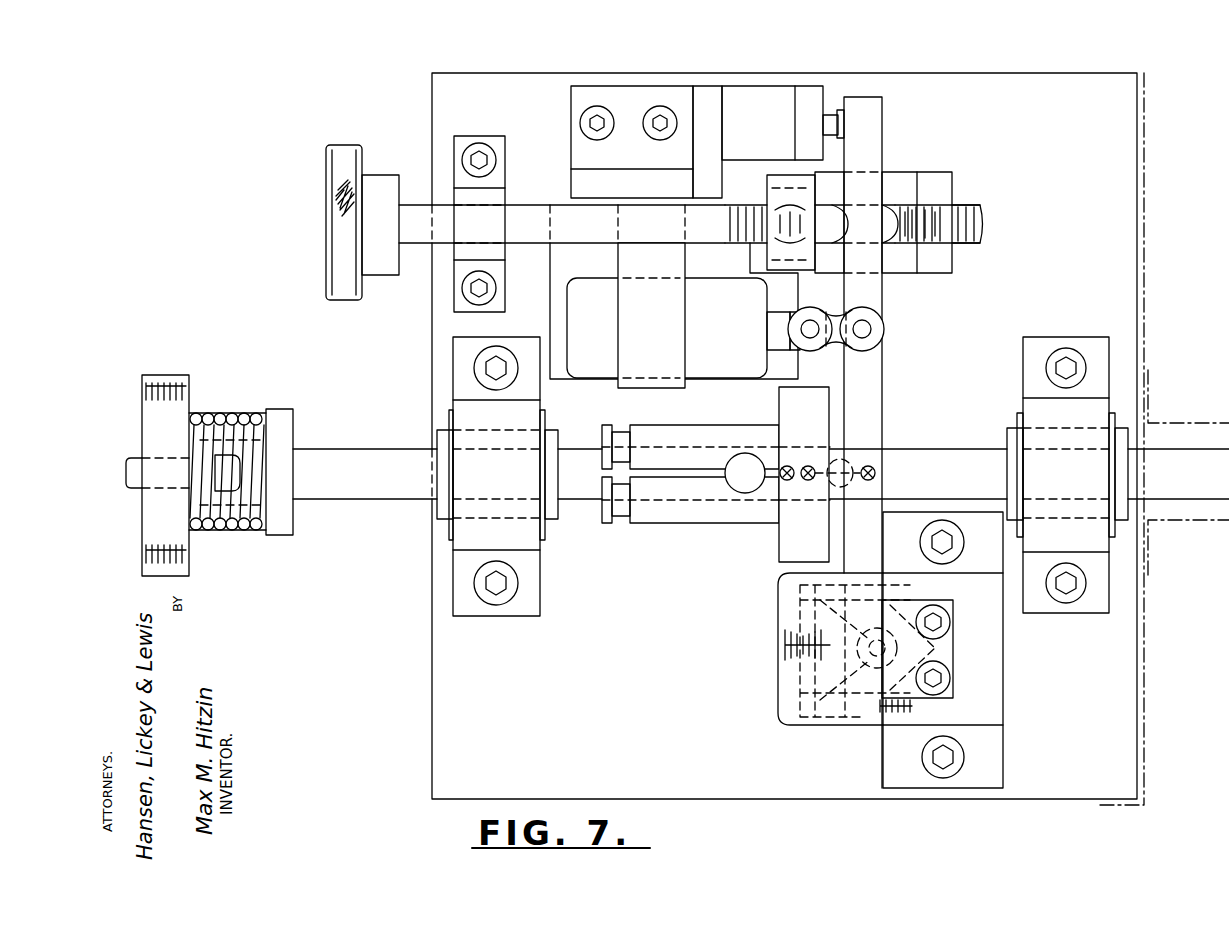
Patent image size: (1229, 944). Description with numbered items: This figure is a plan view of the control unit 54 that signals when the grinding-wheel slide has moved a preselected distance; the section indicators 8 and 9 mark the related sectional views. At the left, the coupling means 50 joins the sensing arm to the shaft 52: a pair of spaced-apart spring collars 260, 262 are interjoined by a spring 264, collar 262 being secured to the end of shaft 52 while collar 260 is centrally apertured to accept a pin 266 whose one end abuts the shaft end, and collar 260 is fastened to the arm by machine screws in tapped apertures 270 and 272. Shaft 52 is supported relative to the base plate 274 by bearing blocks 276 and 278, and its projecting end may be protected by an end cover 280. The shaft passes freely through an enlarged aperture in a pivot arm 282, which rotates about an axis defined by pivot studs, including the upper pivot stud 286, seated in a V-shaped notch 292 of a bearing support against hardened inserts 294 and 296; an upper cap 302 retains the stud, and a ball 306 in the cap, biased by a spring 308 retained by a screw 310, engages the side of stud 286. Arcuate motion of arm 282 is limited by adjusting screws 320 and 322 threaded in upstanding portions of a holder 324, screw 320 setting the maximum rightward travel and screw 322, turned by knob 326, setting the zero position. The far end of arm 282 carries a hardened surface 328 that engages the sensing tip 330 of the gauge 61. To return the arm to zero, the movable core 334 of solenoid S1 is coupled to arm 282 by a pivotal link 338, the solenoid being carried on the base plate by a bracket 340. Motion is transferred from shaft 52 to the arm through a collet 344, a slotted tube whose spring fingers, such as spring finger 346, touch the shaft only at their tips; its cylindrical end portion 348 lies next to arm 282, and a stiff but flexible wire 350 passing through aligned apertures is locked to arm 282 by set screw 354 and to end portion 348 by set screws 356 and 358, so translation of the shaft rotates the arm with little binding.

The section line 8 is at (945, 815).
The section line 9 is at (1223, 328).
The coupling means 50 is at (245, 368).
The shaft 52 is at (367, 507).
The unit 54 is at (387, 602).
The gauge G1 61 is at (760, 112).
The solenoid S1 is at (716, 368).
The spring collar 260 is at (153, 378).
The spring collar 262 is at (300, 432).
The spring 264 is at (225, 418).
The pin 266 is at (124, 462).
The tapped aperture 270 is at (190, 568).
The tapped aperture 272 is at (195, 410).
The base plate 274 is at (432, 680).
The bearing block 276 is at (520, 540).
The bearing block 278 is at (1082, 536).
The end cover 280 is at (1172, 420).
The pivot arm 282 is at (882, 393).
The upper pivot stud 286 is at (925, 600).
The V-shaped notch 292 is at (953, 640).
The hardened insert 294 is at (892, 600).
The hardened insert 296 is at (950, 685).
The upper cap 302 is at (818, 725).
The ball 306 is at (816, 597).
The spring 308 is at (790, 622).
The screw 310 is at (785, 650).
The adjusting screw 320 is at (972, 210).
The adjusting screw 322 is at (757, 205).
The holder 324 is at (890, 176).
The knob 326 is at (325, 165).
The hardened surface 328 is at (847, 122).
The sensing tip 330 is at (830, 125).
The movable core 334 is at (778, 328).
The pivotal link 338 is at (880, 325).
The bracket 340 is at (625, 322).
The collet 344 is at (657, 537).
The spring finger 346 is at (600, 430).
The cylindrical end portion 348 is at (779, 394).
The wire 350 is at (840, 470).
The set screw 354 is at (868, 466).
The set screw 356 is at (787, 466).
The set screw 358 is at (808, 466).